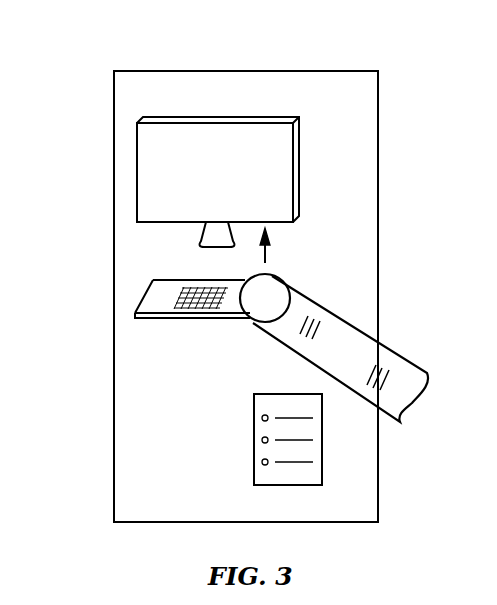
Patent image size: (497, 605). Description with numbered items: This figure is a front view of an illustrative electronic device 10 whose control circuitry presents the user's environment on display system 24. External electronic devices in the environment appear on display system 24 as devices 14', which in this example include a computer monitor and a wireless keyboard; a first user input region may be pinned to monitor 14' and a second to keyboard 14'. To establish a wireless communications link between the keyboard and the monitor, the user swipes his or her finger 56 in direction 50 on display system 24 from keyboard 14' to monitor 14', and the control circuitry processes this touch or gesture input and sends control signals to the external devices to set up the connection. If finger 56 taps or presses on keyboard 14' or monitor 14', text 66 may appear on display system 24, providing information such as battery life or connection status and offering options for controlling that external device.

The electronic device 10 is at (323, 71).
The display system 24 is at (362, 151).
The devices presented on display system 14' is at (217, 209).
The direction 50 is at (266, 250).
The finger 56 is at (397, 348).
The text 66 is at (322, 455).